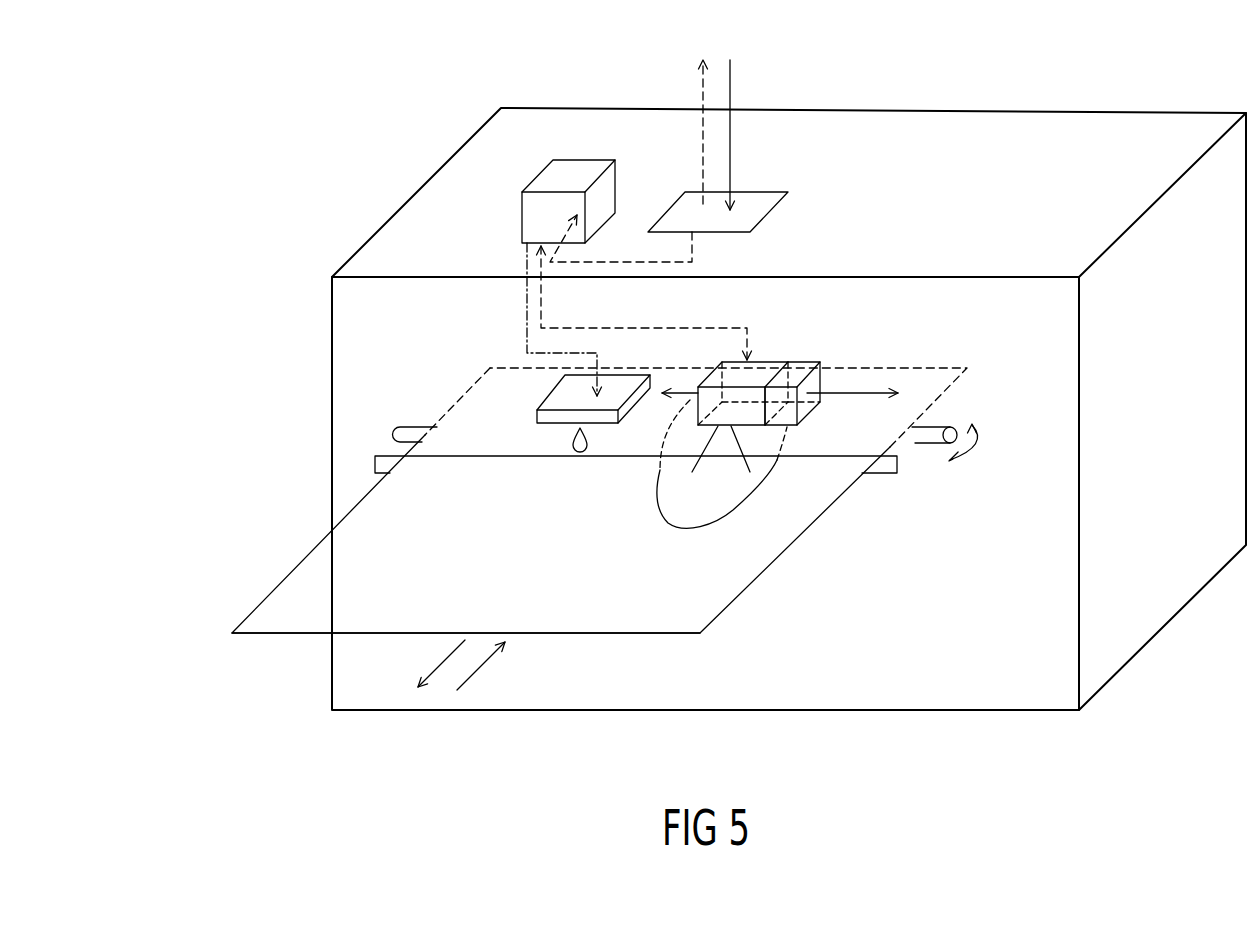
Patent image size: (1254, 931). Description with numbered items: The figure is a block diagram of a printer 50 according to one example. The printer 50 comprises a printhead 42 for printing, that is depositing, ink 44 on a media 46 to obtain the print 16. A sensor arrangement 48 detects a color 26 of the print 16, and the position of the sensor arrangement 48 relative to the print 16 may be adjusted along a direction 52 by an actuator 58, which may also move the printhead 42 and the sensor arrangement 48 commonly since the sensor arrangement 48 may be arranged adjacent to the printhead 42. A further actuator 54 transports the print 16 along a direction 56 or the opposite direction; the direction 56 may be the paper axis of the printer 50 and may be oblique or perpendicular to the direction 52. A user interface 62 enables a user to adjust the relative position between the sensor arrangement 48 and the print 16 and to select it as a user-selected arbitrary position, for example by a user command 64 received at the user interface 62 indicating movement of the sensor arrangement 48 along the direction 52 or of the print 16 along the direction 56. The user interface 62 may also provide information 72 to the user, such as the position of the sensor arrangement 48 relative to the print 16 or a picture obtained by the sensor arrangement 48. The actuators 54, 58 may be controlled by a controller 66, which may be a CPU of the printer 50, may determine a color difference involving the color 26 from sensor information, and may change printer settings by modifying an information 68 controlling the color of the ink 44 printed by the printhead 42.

The print 16 is at (283, 568).
The color 26 is at (698, 496).
The printhead 42 is at (537, 415).
The ink 44 is at (573, 442).
The media 46 is at (265, 615).
The sensor arrangement 48 is at (773, 362).
The printer 50 is at (358, 193).
The direction 52 is at (862, 393).
The actuator 54 is at (928, 445).
The direction 56 is at (437, 670).
The actuator 58 is at (807, 362).
The user interface 62 is at (760, 192).
The user command 64 is at (730, 60).
The controller 66 is at (580, 158).
The information 68 is at (527, 338).
The information 72 is at (703, 90).